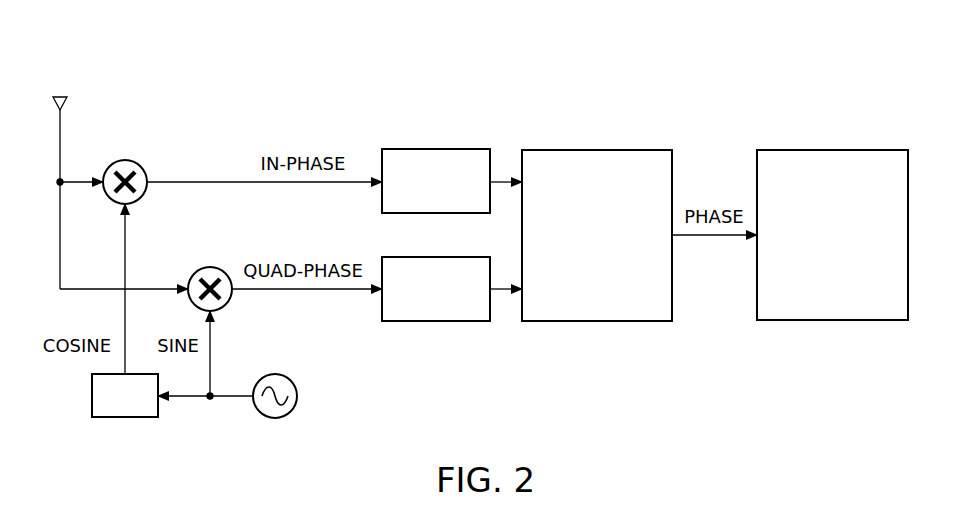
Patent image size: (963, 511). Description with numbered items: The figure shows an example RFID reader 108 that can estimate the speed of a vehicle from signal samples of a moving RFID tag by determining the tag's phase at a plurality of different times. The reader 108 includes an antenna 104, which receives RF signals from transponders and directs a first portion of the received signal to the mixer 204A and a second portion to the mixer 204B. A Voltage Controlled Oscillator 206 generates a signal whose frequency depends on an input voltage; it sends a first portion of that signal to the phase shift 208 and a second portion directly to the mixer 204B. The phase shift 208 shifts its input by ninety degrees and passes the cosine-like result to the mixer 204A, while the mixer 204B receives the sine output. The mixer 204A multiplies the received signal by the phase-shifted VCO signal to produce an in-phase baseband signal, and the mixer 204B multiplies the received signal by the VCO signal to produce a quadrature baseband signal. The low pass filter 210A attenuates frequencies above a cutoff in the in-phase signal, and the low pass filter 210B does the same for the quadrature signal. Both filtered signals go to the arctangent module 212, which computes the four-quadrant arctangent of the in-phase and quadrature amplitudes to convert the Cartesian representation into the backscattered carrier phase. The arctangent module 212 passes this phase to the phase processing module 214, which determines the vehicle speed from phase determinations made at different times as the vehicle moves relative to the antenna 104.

The antenna 104 is at (62, 95).
The RFID reader 108 is at (756, 76).
The mixer 204A is at (124, 160).
The mixer 204B is at (209, 267).
The Voltage Controlled Oscillator 206 is at (271, 419).
The phase shift 208 is at (114, 418).
The low pass filter 210A is at (436, 148).
The low pass filter 210B is at (436, 322).
The arctangent module 212 is at (598, 322).
The phase processing module 214 is at (833, 321).